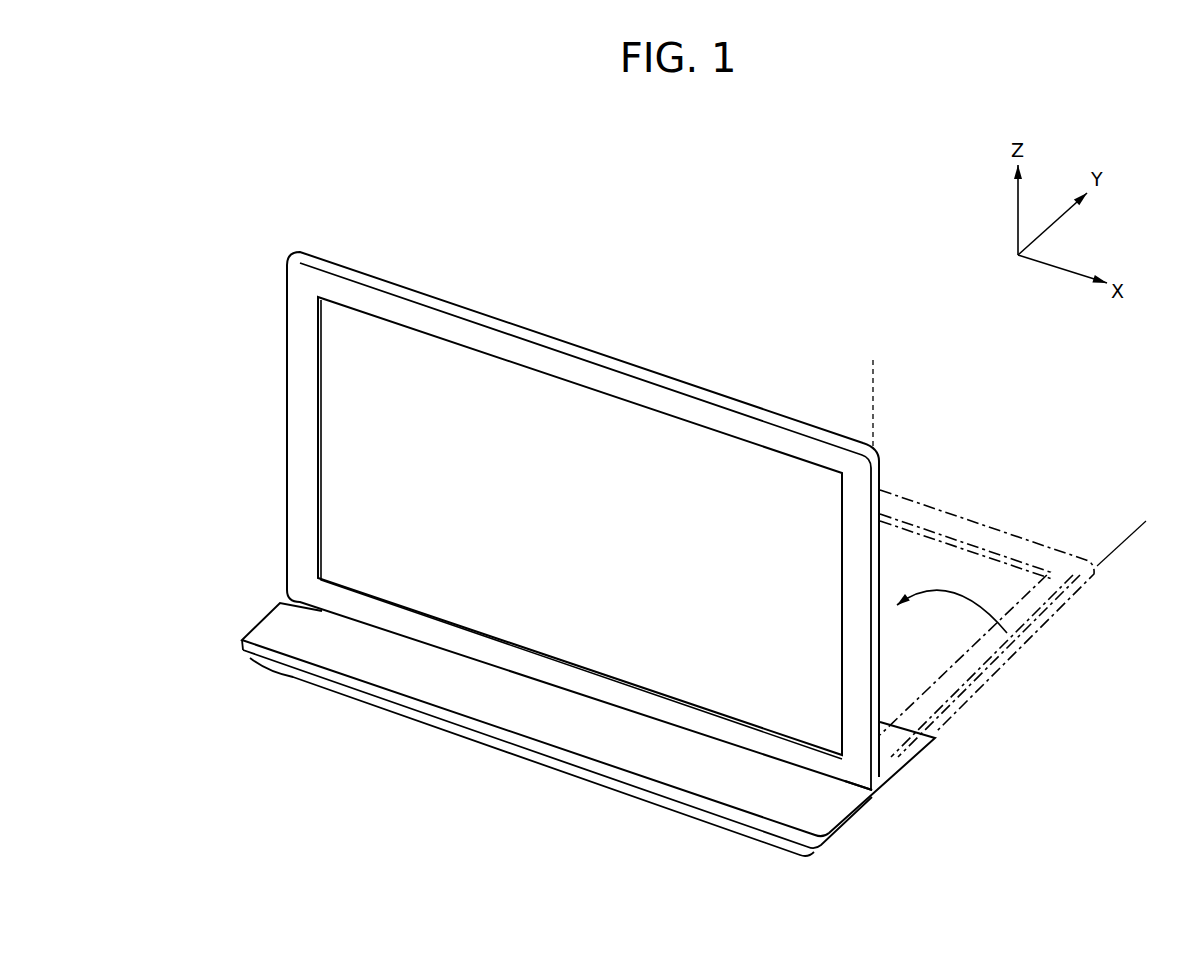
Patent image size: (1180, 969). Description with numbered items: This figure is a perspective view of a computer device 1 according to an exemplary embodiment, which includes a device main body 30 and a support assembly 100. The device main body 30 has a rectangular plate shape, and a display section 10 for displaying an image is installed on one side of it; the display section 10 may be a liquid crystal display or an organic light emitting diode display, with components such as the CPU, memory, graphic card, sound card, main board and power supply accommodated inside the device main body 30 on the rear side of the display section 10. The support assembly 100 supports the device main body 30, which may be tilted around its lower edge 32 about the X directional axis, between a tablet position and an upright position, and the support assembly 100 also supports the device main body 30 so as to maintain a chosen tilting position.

The computer device 1 is at (680, 252).
The display section 10 is at (433, 371).
The device main body 30 is at (265, 427).
The lower edge 32 is at (880, 777).
The support assembly 100 is at (254, 609).